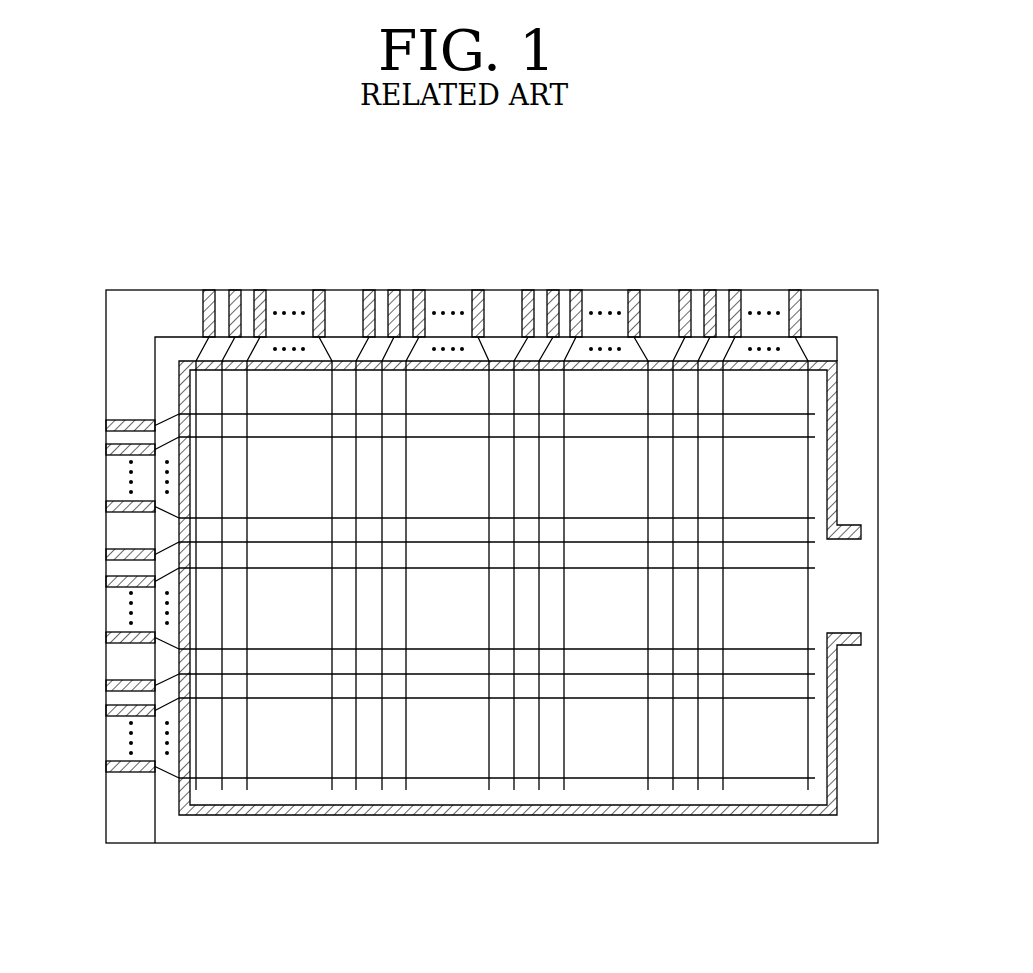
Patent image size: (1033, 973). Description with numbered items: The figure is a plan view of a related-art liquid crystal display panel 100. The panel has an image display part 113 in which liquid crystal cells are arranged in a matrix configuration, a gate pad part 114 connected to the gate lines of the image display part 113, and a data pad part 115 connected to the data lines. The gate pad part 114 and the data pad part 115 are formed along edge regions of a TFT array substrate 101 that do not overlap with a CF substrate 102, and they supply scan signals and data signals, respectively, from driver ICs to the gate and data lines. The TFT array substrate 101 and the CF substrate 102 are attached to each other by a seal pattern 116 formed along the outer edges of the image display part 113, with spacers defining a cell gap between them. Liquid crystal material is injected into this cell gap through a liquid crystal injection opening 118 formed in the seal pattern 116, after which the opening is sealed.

The liquid crystal display panel 100 is at (135, 270).
The TFT array substrate 101 is at (865, 313).
The CF substrate 102 is at (865, 378).
The image display part 113 is at (467, 490).
The gate pad part 114 is at (97, 420).
The data pad part 115 is at (806, 272).
The seal pattern 116 is at (836, 450).
The liquid crystal injection opening 118 is at (865, 578).